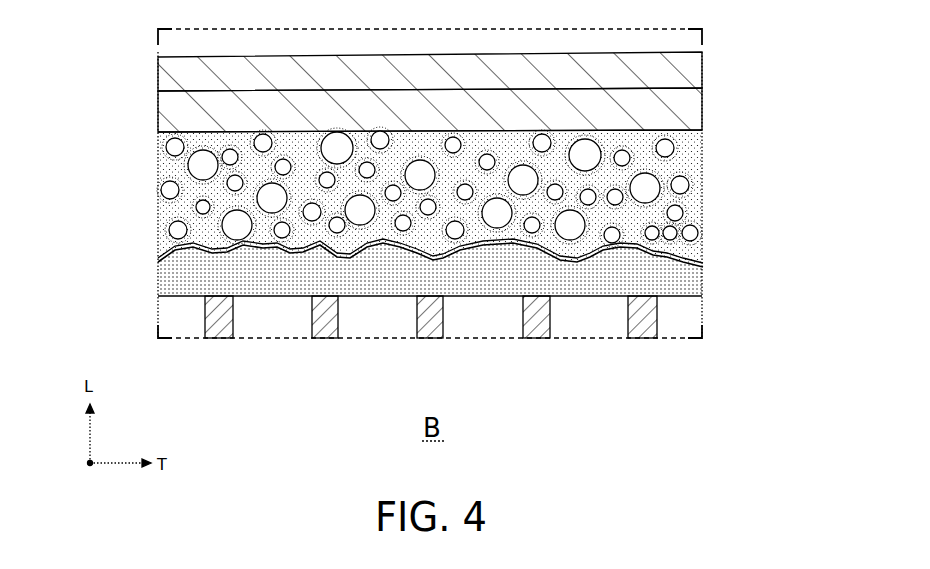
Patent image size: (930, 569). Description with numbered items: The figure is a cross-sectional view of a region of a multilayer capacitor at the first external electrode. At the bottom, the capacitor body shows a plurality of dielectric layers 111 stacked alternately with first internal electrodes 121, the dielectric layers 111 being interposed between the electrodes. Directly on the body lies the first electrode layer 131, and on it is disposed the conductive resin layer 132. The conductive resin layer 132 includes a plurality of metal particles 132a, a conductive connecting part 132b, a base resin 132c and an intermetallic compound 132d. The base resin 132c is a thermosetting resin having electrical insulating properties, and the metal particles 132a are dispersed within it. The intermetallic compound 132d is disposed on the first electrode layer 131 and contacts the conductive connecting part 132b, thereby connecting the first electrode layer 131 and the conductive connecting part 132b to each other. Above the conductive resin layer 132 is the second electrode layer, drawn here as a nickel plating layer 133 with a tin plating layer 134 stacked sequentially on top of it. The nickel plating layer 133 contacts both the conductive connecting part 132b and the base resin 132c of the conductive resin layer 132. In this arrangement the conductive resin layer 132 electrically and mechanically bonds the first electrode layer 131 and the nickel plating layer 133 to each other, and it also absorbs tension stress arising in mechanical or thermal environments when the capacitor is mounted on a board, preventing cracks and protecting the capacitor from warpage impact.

The tin plating layer 134 is at (703, 86).
The nickel plating layer 133 is at (703, 122).
The conductive resin layer 132 is at (508, 202).
The metal particles 132a is at (703, 188).
The conductive connecting part 132b is at (697, 222).
The base resin 132c is at (703, 160).
The intermetallic compound 132d is at (479, 258).
The first electrode layer 131 is at (483, 278).
The first internal electrodes 121 is at (647, 332).
The dielectric layers 111 is at (588, 322).